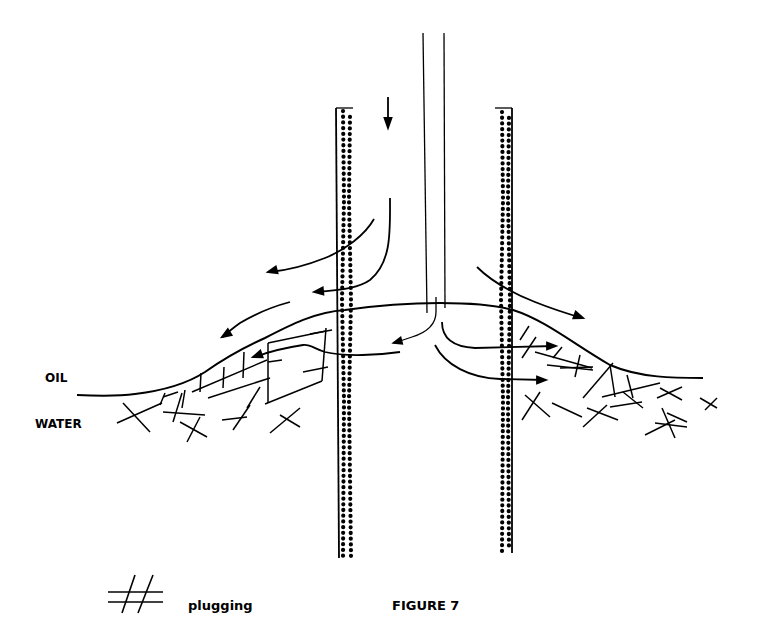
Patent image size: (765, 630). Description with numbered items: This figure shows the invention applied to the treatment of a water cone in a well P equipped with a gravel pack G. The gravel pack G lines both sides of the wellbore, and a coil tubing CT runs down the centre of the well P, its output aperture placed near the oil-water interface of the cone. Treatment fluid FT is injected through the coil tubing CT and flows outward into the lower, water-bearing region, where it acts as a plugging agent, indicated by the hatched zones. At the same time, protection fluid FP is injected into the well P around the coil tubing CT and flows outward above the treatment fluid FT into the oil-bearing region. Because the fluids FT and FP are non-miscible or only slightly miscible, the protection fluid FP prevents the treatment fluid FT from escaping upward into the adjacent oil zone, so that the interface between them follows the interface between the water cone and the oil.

The coil tubing CT is at (420, 178).
The well P is at (455, 86).
The gravel pack G is at (502, 98).
The protection fluid FP is at (416, 213).
The treatment fluid FT is at (411, 279).